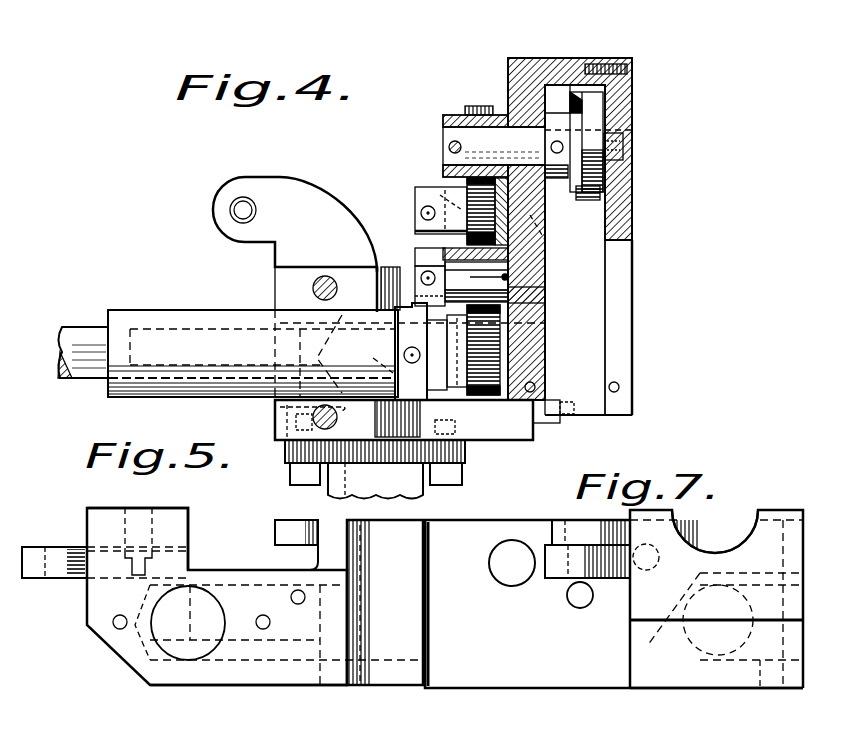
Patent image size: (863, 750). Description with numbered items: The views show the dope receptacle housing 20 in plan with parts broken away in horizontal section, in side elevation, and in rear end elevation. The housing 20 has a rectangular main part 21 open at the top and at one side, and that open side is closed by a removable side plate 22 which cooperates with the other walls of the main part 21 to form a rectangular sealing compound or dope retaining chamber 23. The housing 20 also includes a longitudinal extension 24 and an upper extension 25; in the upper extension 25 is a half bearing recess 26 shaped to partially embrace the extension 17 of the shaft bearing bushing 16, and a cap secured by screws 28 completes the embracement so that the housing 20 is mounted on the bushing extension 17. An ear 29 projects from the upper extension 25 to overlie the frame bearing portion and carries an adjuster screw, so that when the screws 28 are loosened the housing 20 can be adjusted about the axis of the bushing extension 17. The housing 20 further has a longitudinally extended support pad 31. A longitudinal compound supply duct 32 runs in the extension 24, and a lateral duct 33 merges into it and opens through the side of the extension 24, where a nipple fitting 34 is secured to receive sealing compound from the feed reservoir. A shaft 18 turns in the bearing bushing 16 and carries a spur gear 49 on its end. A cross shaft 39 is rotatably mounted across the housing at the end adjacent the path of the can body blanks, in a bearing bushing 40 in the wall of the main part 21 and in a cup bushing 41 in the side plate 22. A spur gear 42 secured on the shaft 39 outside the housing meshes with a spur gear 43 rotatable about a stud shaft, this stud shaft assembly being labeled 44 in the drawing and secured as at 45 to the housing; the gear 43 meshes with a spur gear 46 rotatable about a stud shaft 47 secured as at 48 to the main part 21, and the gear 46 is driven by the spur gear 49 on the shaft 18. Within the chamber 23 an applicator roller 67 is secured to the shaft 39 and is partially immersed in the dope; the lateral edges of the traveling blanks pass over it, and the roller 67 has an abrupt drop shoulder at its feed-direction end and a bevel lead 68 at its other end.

In FIG. 4, the shaft bearing bushing 16 is at (158, 318).
In FIG. 4, the bushing extension 17 is at (385, 292).
In FIG. 4, the shaft 18 is at (80, 332).
In FIG. 4, the housing or receptacle 20 is at (565, 92).
In FIG. 5, the housing or receptacle 20 is at (295, 688).
In FIG. 7, the housing or receptacle 20 is at (614, 604).
In FIG. 4, the rectangular main part 21 is at (512, 70).
In FIG. 5, the rectangular main part 21 is at (385, 602).
In FIG. 4, the removable side plate 22 is at (622, 272).
In FIG. 4, the sealing compound or dope retaining chamber 23 is at (590, 222).
In FIG. 4, the longitudinal extension 24 is at (512, 428).
In FIG. 5, the longitudinal extension 24 is at (228, 678).
In FIG. 7, the longitudinal extension 24 is at (650, 672).
In FIG. 5, the upper extension 25 is at (178, 520).
In FIG. 7, the upper extension 25 is at (765, 527).
In FIG. 4, the half bearing recess 26 is at (292, 303).
In FIG. 7, the half bearing recess 26 is at (690, 535).
In FIG. 4, the screws 28 is at (326, 277).
In FIG. 4, the ear 29 is at (218, 193).
In FIG. 5, the ear 29 is at (37, 556).
In FIG. 7, the ear 29 is at (510, 582).
In FIG. 5, the support pad 31 is at (276, 528).
In FIG. 7, the support pad 31 is at (578, 530).
In FIG. 4, the longitudinal compound supply duct 32 is at (538, 318).
In FIG. 5, the longitudinal compound supply duct 32 is at (256, 568).
In FIG. 7, the longitudinal compound supply duct 32 is at (712, 660).
In FIG. 4, the lateral duct 33 is at (278, 408).
In FIG. 5, the lateral duct 33 is at (165, 640).
In FIG. 7, the lateral duct 33 is at (763, 664).
In FIG. 4, the nipple fitting 34 is at (375, 481).
In FIG. 4, the shaft 39 is at (494, 146).
In FIG. 4, the bearing bushing 40 is at (498, 115).
In FIG. 4, the cup bushing 41 is at (633, 130).
In FIG. 4, the spur gear 42 is at (465, 110).
In FIG. 4, the spur gear 43 is at (470, 202).
In FIG. 4, the key 44 is at (412, 192).
In FIG. 4, the stud shaft securing point 45 is at (548, 232).
In FIG. 4, the spur gear 46 is at (425, 243).
In FIG. 4, the stud shaft 47 is at (500, 272).
In FIG. 4, the stud shaft securing point 48 is at (528, 274).
In FIG. 4, the spur gear 49 is at (485, 355).
In FIG. 4, the applicator roller 67 is at (592, 100).
In FIG. 4, the bevel lead 68 is at (565, 92).